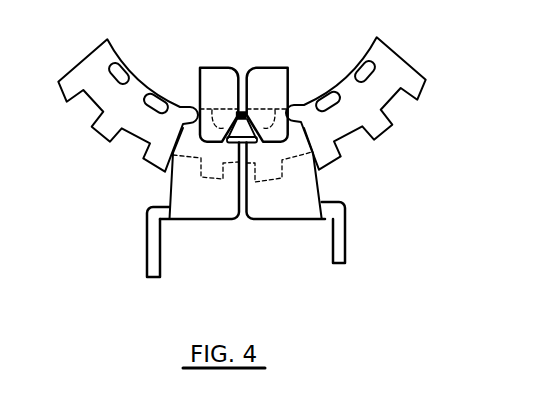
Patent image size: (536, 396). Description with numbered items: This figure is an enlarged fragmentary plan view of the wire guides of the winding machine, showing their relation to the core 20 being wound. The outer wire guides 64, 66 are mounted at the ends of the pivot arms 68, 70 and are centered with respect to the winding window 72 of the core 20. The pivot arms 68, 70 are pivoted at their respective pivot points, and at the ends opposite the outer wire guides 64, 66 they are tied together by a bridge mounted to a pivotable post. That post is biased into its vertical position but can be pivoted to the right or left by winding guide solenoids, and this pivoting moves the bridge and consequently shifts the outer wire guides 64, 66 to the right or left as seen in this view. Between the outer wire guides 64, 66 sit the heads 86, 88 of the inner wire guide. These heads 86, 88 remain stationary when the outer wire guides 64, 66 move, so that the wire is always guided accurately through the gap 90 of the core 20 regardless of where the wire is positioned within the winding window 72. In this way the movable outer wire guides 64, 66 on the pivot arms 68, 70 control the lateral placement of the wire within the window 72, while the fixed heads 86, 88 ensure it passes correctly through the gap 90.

The core 20 is at (390, 83).
The head of inner wire guide 86 is at (218, 76).
The head of inner wire guide 88 is at (272, 77).
The gap of the core 90 is at (247, 113).
The winding window 72 is at (243, 118).
The outer wire guide 64 is at (217, 208).
The outer wire guide 66 is at (297, 208).
The pivot arm 68 is at (157, 267).
The pivot arm 70 is at (337, 262).